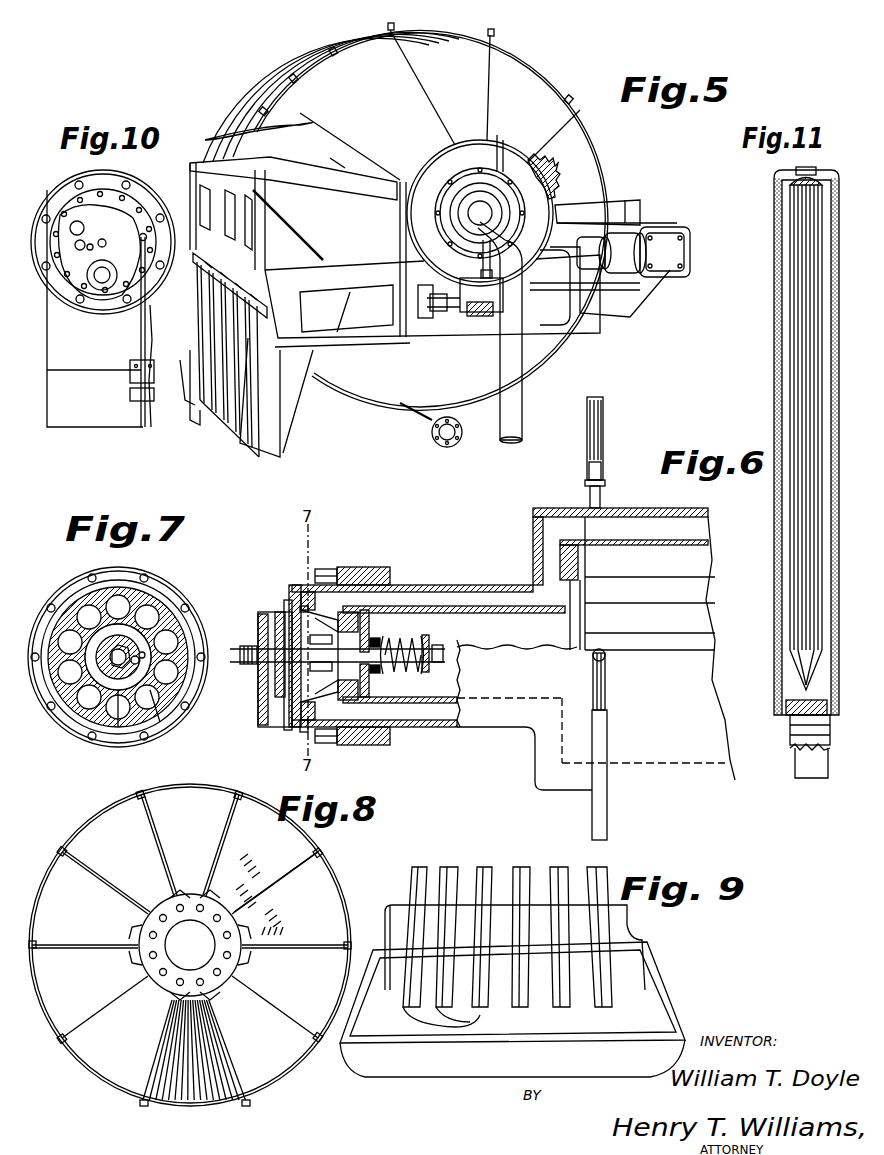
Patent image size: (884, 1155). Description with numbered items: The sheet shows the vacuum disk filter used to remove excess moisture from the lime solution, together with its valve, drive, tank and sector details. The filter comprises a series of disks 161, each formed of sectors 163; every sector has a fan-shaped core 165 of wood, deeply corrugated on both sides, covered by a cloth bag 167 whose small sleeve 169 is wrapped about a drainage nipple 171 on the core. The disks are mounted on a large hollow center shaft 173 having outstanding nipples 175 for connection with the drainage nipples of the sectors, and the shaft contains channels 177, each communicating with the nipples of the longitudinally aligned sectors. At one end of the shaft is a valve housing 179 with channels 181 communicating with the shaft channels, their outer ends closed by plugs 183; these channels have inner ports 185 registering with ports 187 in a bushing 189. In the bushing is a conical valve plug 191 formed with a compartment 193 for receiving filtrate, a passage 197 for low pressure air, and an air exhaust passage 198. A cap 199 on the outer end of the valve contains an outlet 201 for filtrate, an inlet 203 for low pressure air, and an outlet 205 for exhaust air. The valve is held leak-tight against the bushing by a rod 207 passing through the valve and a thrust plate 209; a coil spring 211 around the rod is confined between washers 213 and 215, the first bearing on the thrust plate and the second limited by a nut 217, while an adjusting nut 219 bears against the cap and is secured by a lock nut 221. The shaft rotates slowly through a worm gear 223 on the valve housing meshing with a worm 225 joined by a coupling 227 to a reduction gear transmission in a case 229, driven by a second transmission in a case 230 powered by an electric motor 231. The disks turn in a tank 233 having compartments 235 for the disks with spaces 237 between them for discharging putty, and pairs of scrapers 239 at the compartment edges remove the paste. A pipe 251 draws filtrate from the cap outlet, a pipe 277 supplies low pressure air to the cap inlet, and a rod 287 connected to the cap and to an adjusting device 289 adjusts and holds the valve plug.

In FIG. 5, the disks 161 is at (210, 139).
In FIG. 6, the disks 161 is at (607, 727).
In FIG. 8, the disks 161 is at (175, 785).
In FIG. 5, the sectors 163 is at (580, 110).
In FIG. 11, the sectors 163 is at (772, 234).
In FIG. 6, the sectors 163 is at (605, 425).
In FIG. 8, the sectors 163 is at (150, 800).
In FIG. 11, the fan-shaped core 165 is at (800, 343).
In FIG. 6, the fan-shaped core 165 is at (600, 402).
In FIG. 8, the fan-shaped core 165 is at (213, 1108).
In FIG. 11, the cloth bag 167 is at (778, 372).
In FIG. 8, the cloth bag 167 is at (278, 1066).
In FIG. 11, the sleeve 169 is at (792, 740).
In FIG. 11, the drainage nipple 171 is at (795, 766).
In FIG. 6, the drainage nipple 171 is at (602, 453).
In FIG. 6, the hollow center shaft 173 is at (672, 510).
In FIG. 6, the nipples 175 is at (601, 500).
In FIG. 6, the channels 177 is at (690, 526).
In FIG. 6, the valve housing 179 is at (327, 563).
In FIG. 6, the channels 181 is at (380, 590).
In FIG. 7, the channels 181 is at (118, 597).
In FIG. 6, the plugs 183 is at (305, 600).
In FIG. 6, the inner ports 185 is at (295, 590).
In FIG. 6, the ports 187 is at (340, 622).
In FIG. 7, the ports 187 is at (170, 622).
In FIG. 6, the bushing 189 is at (350, 590).
In FIG. 7, the bushing 189 is at (150, 735).
In FIG. 6, the conical valve plug 191 is at (262, 680).
In FIG. 7, the compartment 193 is at (108, 668).
In FIG. 6, the passage 197 is at (320, 644).
In FIG. 7, the passage 197 is at (150, 612).
In FIG. 6, the air exhaust passage 198 is at (300, 640).
In FIG. 7, the air exhaust passage 198 is at (146, 658).
In FIG. 10, the cap 199 is at (143, 222).
In FIG. 10, the outlet 201 is at (102, 280).
In FIG. 6, the outlet 201 is at (278, 700).
In FIG. 10, the inlet 203 is at (75, 225).
In FIG. 10, the outlet 205 is at (90, 262).
In FIG. 6, the rod 207 is at (287, 670).
In FIG. 6, the thrust plate 209 is at (370, 640).
In FIG. 6, the coil spring 211 is at (426, 636).
In FIG. 6, the washer 213 is at (378, 674).
In FIG. 6, the washer 215 is at (418, 672).
In FIG. 6, the nut 217 is at (440, 663).
In FIG. 6, the adjusting nut 219 is at (256, 665).
In FIG. 6, the lock nut 221 is at (242, 660).
In FIG. 5, the worm gear 223 is at (535, 170).
In FIG. 5, the worm 225 is at (470, 318).
In FIG. 5, the coupling 227 is at (566, 320).
In FIG. 5, the case 229 is at (612, 303).
In FIG. 5, the case 230 is at (655, 280).
In FIG. 5, the electric motor 231 is at (686, 218).
In FIG. 5, the tank 233 is at (625, 203).
In FIG. 9, the tank 233 is at (652, 995).
In FIG. 5, the compartments 235 is at (230, 398).
In FIG. 9, the compartments 235 is at (457, 1021).
In FIG. 5, the spaces 237 is at (235, 328).
In FIG. 9, the spaces 237 is at (440, 870).
In FIG. 5, the scrapers 239 is at (205, 160).
In FIG. 5, the pipe 251 is at (499, 358).
In FIG. 5, the pipe 277 is at (497, 150).
In FIG. 10, the rod 287 is at (140, 333).
In FIG. 10, the adjusting device 289 is at (130, 380).